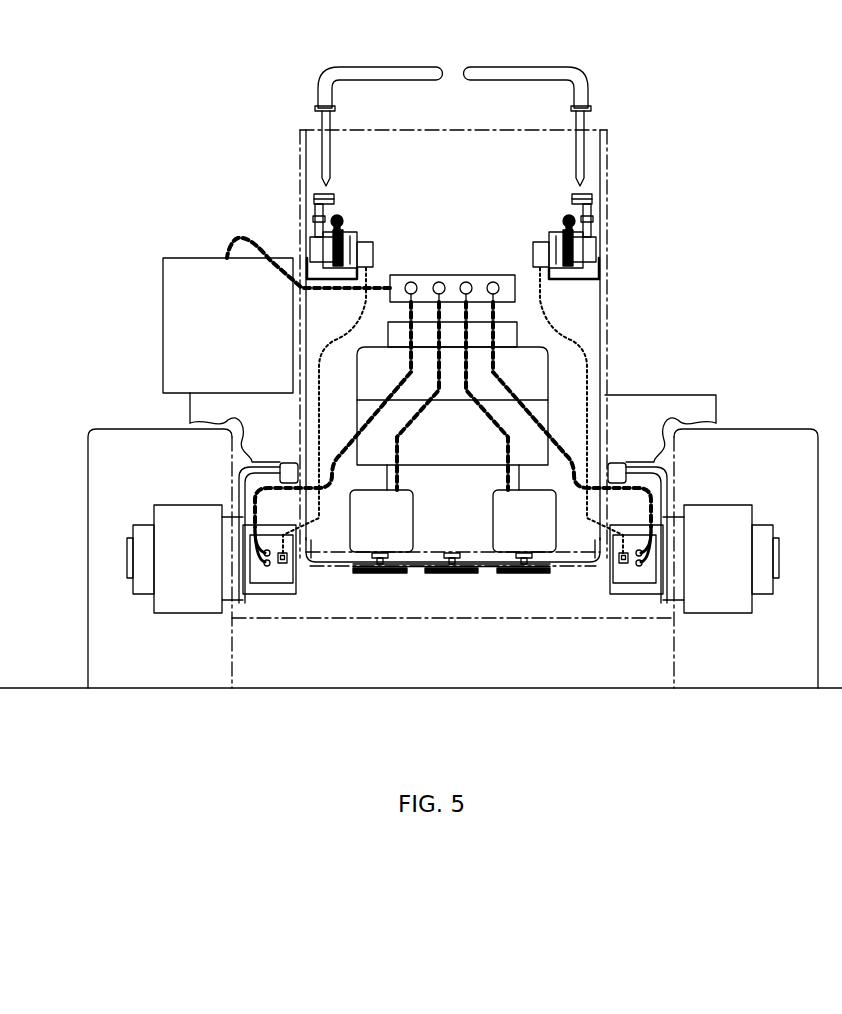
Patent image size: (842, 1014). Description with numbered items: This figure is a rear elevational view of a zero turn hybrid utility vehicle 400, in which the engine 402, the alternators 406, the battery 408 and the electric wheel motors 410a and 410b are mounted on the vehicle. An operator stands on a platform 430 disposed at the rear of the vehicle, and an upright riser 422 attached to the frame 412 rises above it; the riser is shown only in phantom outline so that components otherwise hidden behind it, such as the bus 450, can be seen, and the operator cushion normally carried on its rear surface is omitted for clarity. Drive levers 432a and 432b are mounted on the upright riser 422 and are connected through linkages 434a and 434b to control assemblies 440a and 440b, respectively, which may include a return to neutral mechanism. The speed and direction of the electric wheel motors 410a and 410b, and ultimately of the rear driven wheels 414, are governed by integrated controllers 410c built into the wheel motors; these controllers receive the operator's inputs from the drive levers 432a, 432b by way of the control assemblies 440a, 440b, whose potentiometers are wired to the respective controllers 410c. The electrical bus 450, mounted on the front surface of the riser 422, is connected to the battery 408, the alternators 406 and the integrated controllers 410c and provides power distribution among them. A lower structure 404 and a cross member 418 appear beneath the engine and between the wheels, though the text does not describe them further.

The zero turn hybrid utility vehicle 400 is at (190, 82).
The engine 402 is at (472, 444).
The battery 404 is at (415, 570).
The alternators 406 is at (400, 526).
The battery 408 is at (190, 258).
The electric wheel motor 410a is at (720, 504).
The electric wheel motor 410b is at (188, 504).
The integrated controllers 410c is at (288, 572).
The frame 412 is at (664, 470).
The driven wheels 414 is at (135, 428).
The frame cross member 418 is at (455, 622).
The upright riser 422 is at (453, 130).
The platform 430 is at (340, 567).
The drive lever 432a is at (517, 66).
The drive lever 432b is at (390, 66).
The linkage 434a is at (594, 224).
The linkage 434b is at (312, 224).
The control assembly 440a is at (554, 203).
The control assembly 440b is at (352, 203).
The electrical bus 450 is at (453, 275).